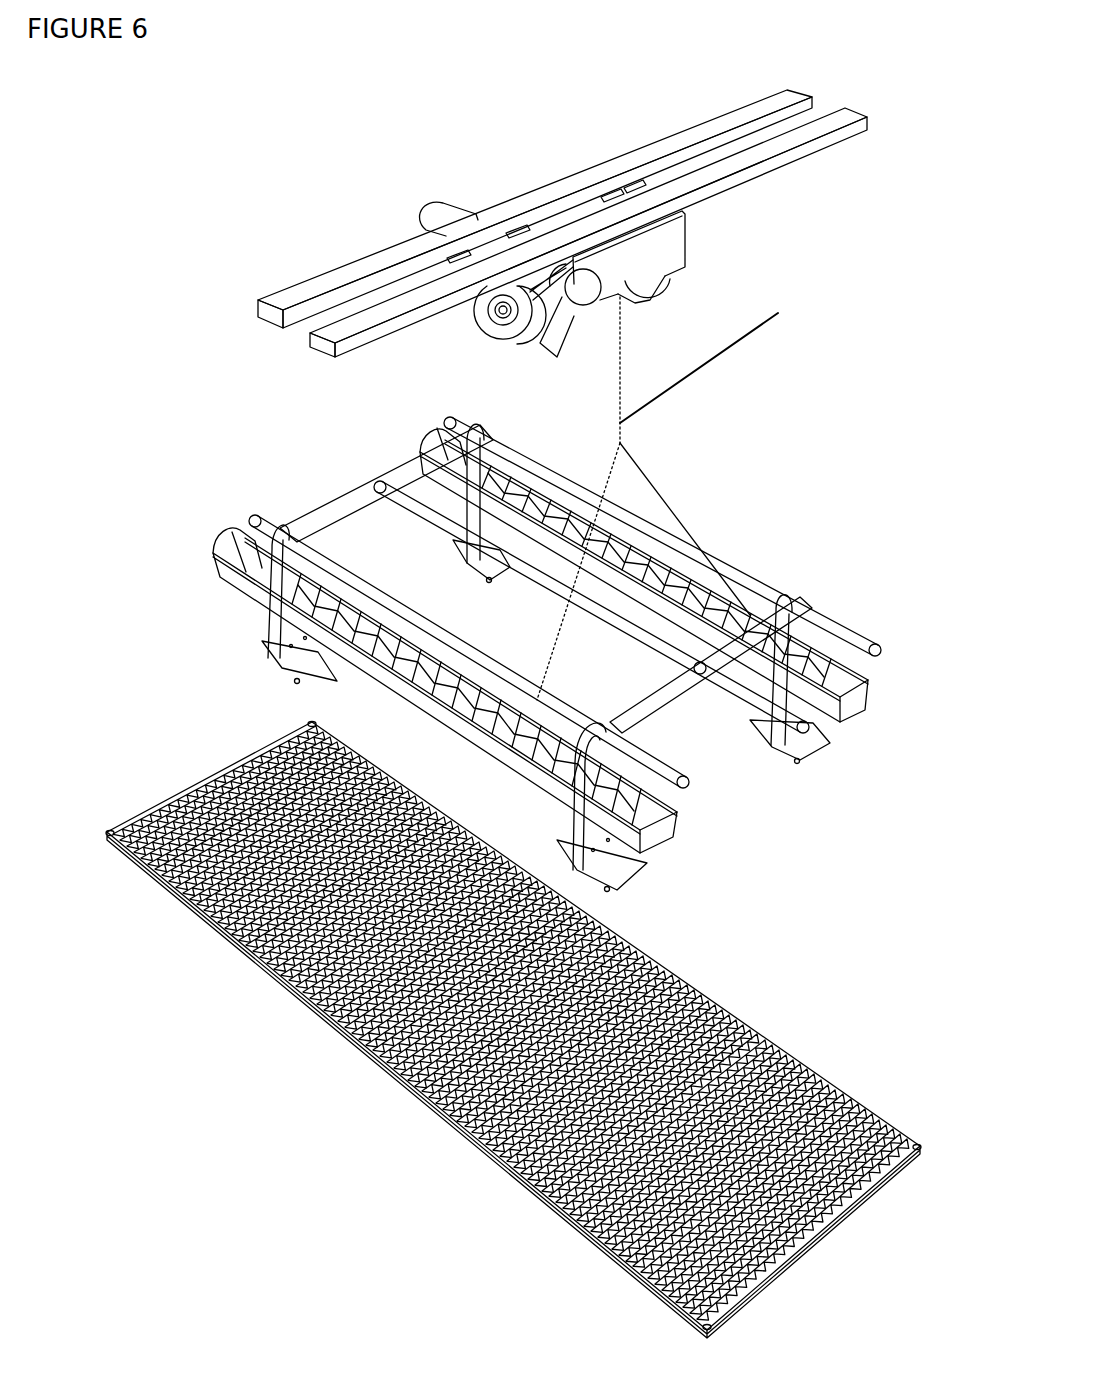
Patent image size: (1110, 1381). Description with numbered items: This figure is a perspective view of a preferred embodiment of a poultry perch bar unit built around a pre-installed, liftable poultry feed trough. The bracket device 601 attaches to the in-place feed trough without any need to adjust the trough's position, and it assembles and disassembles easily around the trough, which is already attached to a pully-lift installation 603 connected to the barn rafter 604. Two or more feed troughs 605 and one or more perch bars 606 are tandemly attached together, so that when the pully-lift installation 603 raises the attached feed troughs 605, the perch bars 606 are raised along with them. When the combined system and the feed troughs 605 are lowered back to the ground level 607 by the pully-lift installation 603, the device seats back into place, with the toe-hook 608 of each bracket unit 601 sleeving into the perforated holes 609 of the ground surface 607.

The device 601 is at (743, 617).
The pully-lift installation 603 is at (663, 253).
The barn rafter 604 is at (385, 262).
The feed troughs 605 is at (217, 547).
The perch bars 606 is at (458, 423).
The ground level 607 is at (122, 877).
The toe-hook 608 is at (797, 760).
The perforated holes 609 is at (387, 982).